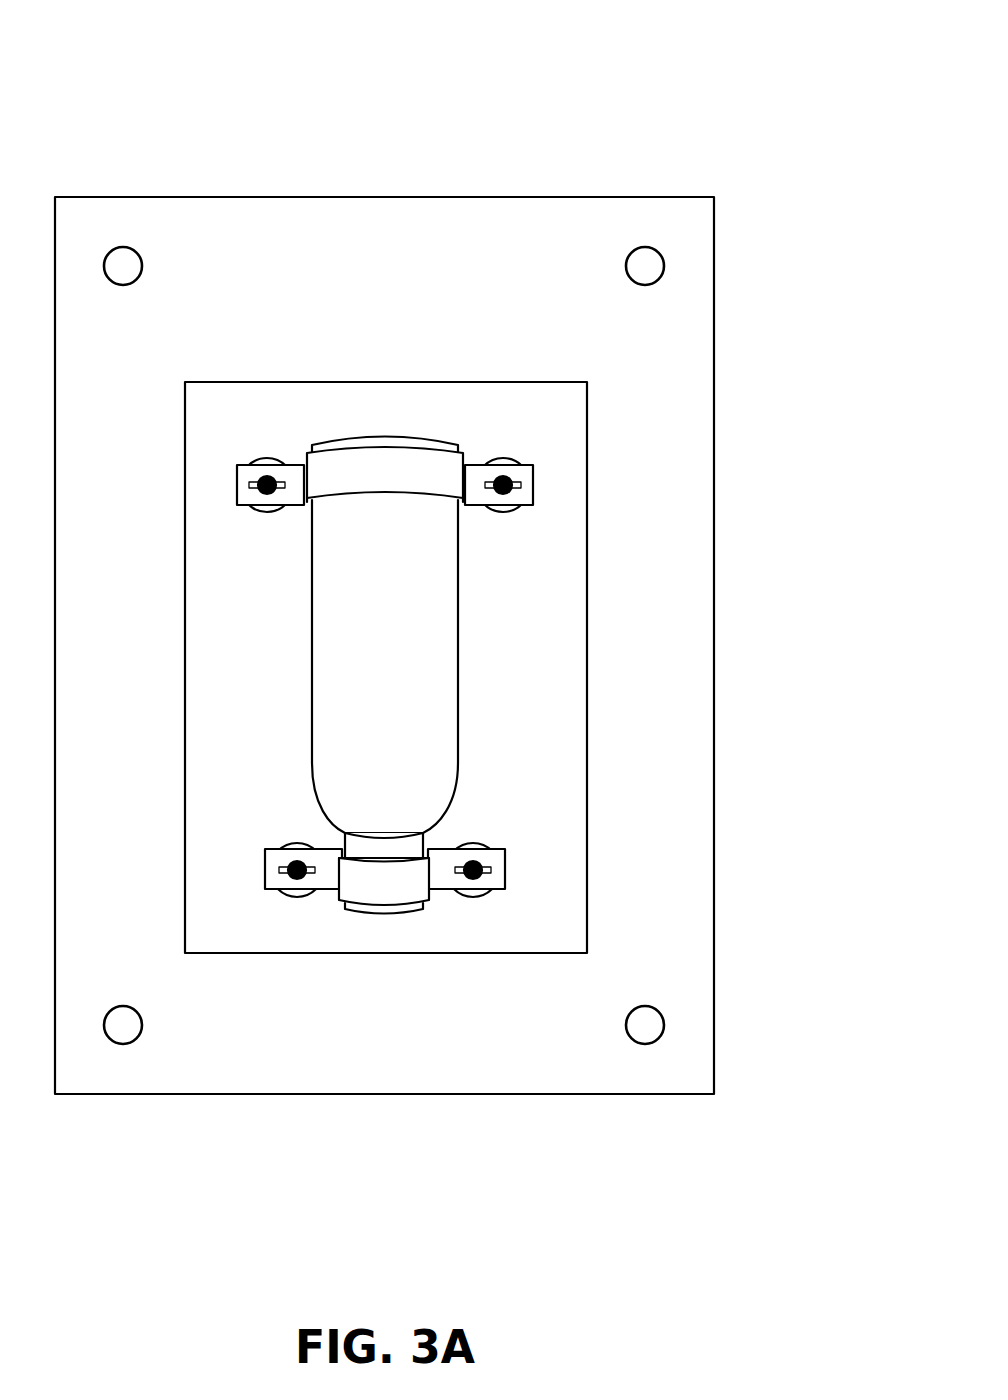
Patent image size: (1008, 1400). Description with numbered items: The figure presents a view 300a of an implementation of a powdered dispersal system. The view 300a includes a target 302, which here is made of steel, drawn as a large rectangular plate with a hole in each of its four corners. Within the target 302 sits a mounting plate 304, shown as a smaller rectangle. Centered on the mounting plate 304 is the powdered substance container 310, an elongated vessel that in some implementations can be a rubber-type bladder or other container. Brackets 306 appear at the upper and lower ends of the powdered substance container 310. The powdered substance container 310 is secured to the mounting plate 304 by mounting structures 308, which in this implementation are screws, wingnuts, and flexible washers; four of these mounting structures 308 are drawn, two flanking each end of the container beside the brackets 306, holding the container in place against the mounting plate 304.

The view 300a is at (462, 547).
The target 302 is at (667, 213).
The mounting plate 304 is at (505, 392).
The brackets 306 is at (386, 465).
The mounting structures 308 is at (247, 483).
The powdered substance container 310 is at (422, 637).